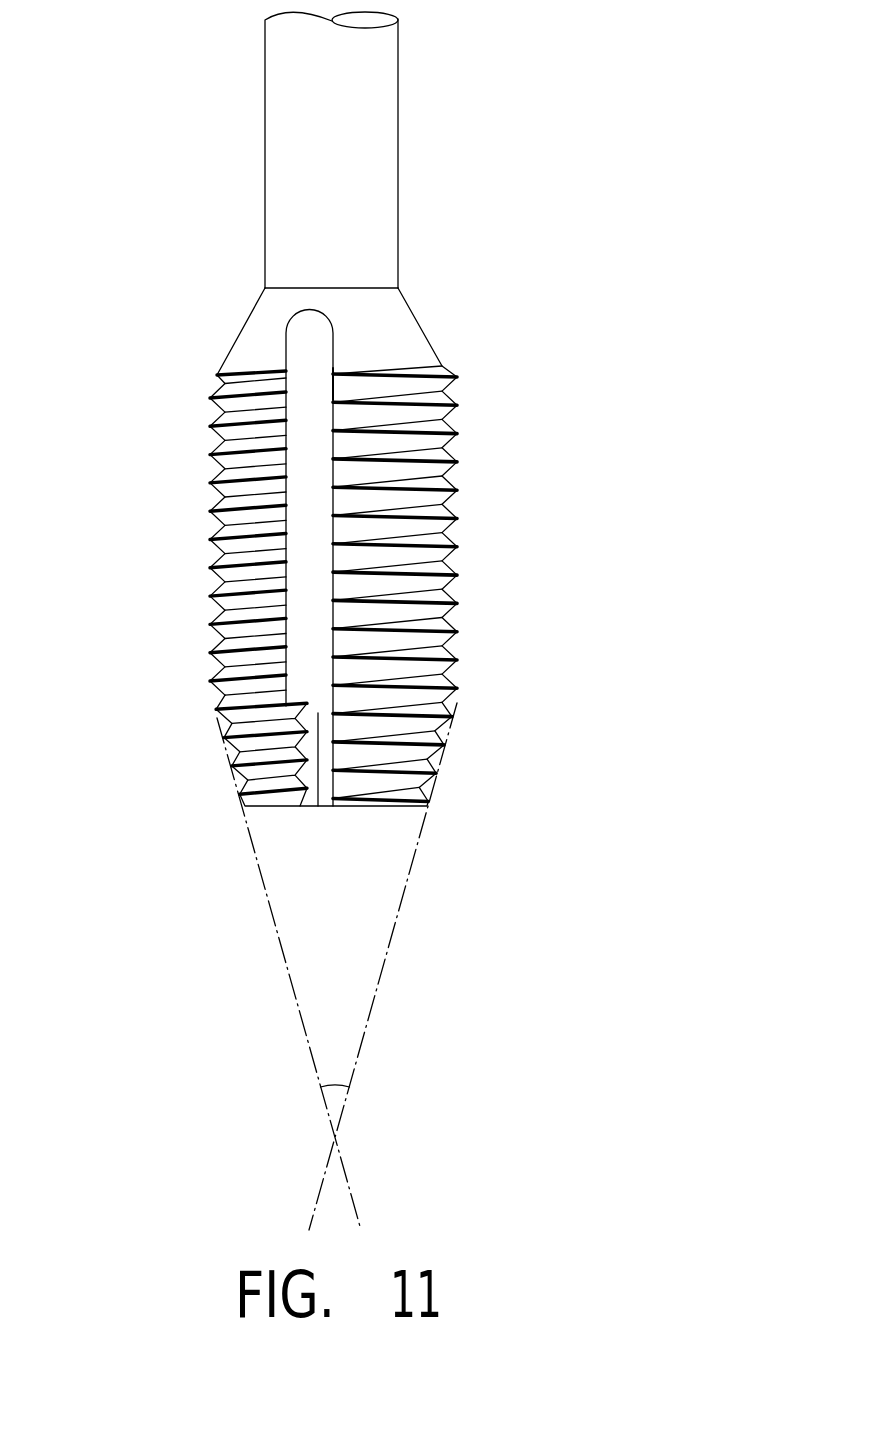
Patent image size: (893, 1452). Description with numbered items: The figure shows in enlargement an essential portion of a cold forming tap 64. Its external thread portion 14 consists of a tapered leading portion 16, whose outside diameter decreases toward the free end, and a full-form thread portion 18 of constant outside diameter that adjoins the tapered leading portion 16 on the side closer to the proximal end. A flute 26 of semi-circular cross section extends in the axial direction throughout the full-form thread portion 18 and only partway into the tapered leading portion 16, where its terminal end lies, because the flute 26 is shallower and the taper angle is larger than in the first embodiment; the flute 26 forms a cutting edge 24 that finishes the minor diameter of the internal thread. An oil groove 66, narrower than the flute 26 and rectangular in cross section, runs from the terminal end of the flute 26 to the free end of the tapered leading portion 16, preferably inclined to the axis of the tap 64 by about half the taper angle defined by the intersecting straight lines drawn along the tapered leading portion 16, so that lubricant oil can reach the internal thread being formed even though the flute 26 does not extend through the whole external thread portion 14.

The cold forming tap 64 is at (538, 125).
The external thread portion 14 is at (105, 513).
The full-form thread portion 18 is at (182, 380).
The tapered leading portion 16 is at (182, 707).
The cutting edge 24 is at (333, 388).
The flute 26 is at (308, 387).
The oil groove 66 is at (327, 798).